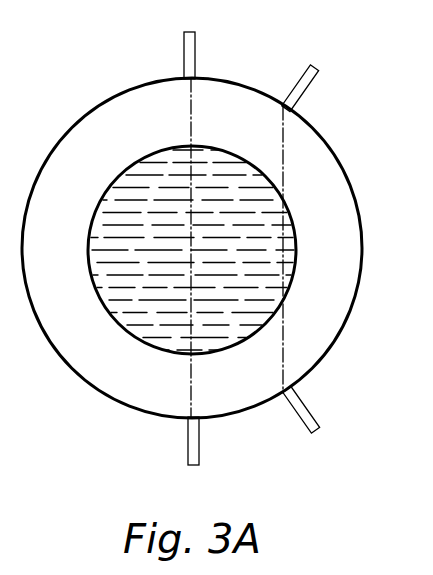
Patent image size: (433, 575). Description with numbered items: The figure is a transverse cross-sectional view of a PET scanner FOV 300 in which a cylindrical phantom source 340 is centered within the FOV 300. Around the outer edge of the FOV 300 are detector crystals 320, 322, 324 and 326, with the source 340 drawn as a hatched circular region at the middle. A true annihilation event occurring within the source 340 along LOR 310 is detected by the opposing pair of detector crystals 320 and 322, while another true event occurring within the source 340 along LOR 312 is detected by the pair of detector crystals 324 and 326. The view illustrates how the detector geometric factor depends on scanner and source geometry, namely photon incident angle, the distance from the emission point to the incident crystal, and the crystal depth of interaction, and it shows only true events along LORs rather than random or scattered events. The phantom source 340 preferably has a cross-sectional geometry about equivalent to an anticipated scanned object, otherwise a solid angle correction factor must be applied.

The PET scanner FOV 300 is at (335, 348).
The LOR 310 is at (190, 118).
The LOR 312 is at (287, 160).
The detector crystal 320 is at (183, 53).
The detector crystal 322 is at (188, 444).
The detector crystal 324 is at (297, 420).
The detector crystal 326 is at (290, 77).
The cylindrical phantom source 340 is at (113, 317).